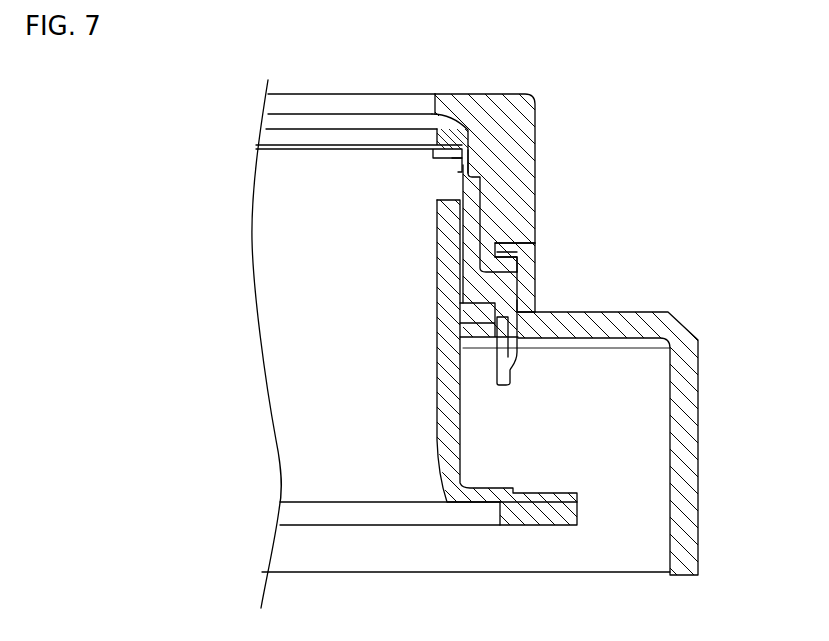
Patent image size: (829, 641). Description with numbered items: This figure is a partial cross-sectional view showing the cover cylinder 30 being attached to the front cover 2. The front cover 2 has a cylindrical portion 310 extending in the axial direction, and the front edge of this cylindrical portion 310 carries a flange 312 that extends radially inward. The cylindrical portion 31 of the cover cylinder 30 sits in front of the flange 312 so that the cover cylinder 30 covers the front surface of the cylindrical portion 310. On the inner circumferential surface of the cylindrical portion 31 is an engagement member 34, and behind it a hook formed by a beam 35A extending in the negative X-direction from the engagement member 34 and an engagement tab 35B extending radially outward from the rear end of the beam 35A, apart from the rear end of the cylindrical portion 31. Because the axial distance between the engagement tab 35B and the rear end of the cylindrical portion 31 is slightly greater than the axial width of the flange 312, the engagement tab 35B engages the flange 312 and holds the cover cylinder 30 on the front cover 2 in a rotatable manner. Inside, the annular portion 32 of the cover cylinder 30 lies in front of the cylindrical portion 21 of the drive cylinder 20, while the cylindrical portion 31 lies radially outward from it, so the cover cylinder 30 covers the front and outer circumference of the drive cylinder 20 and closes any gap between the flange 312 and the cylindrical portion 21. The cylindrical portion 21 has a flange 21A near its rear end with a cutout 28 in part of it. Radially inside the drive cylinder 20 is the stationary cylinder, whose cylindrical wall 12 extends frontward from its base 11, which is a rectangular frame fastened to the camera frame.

The front cover 2 is at (699, 440).
The base 11 is at (533, 492).
The cylindrical wall 12 is at (447, 325).
The drive cylinder 20 is at (518, 378).
The cylindrical portion 21 is at (462, 228).
The flange 21A is at (465, 302).
The cutout 28 is at (470, 162).
The cover cylinder 30 is at (550, 116).
The cylindrical portion 31 is at (526, 206).
The annular portion 32 is at (458, 93).
The engagement member 34 is at (460, 172).
The beam 35A is at (458, 182).
The engagement tab 35B is at (522, 264).
The cylindrical portion 310 is at (534, 288).
The flange 312 is at (514, 239).